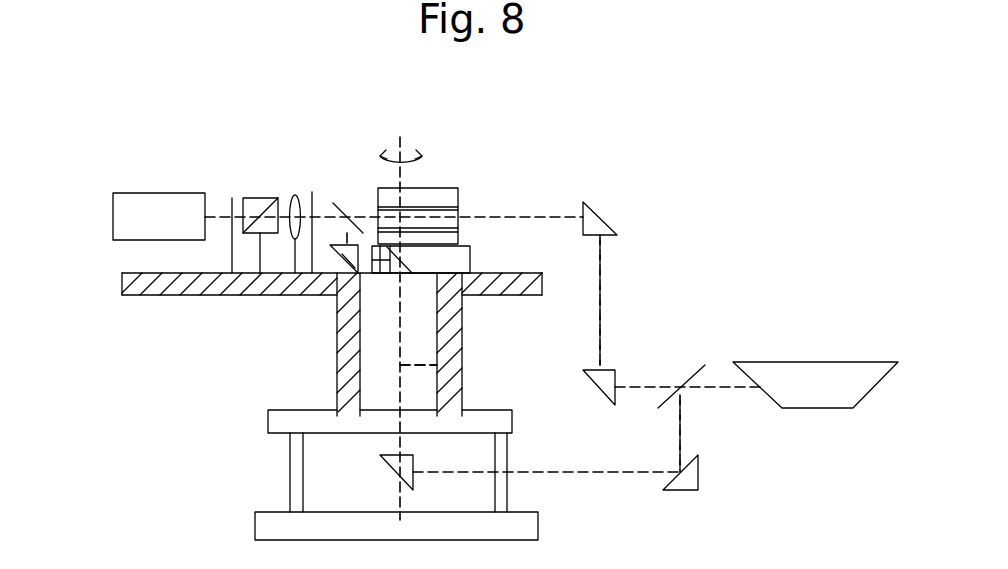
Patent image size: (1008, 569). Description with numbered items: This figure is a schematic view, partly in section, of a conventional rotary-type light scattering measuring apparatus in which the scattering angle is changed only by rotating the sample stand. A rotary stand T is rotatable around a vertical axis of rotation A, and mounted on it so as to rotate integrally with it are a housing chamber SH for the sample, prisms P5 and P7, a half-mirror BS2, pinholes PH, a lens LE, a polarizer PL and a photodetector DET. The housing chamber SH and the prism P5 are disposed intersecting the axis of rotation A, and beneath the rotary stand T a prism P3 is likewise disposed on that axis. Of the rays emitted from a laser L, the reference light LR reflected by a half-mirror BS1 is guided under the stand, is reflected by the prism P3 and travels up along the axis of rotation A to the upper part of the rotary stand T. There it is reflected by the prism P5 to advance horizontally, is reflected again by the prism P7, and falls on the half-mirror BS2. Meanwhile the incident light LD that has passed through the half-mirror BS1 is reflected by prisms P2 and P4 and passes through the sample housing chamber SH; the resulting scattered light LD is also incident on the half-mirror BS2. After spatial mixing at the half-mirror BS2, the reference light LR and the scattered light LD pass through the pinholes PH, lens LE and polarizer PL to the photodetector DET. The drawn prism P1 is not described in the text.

The photodetector DET is at (158, 193).
The pinholes PH is at (232, 197).
The polarizer PL is at (258, 198).
The lens LE is at (296, 195).
The half-mirror BS2 is at (346, 200).
The axis of rotation A is at (401, 135).
The housing chamber SH is at (453, 197).
The rotary stand T is at (518, 272).
The prism P7 is at (332, 273).
The prism P5 is at (395, 262).
The reference light LR is at (682, 430).
The prism P3 is at (387, 460).
The prism P4 is at (590, 207).
The incident light LD is at (600, 300).
The half-mirror BS1 is at (690, 370).
The laser L is at (827, 370).
The prism P2 is at (592, 378).
The prism P1 is at (697, 475).